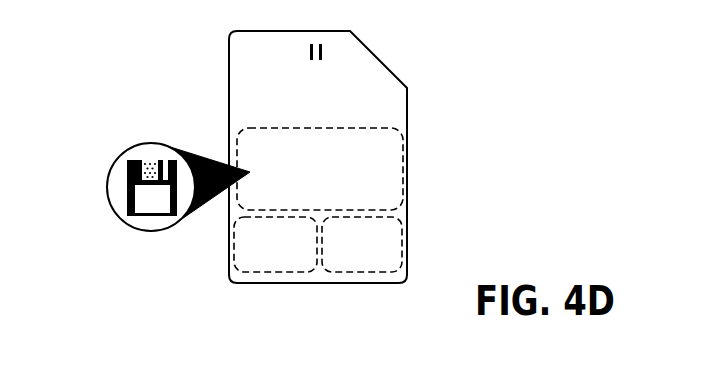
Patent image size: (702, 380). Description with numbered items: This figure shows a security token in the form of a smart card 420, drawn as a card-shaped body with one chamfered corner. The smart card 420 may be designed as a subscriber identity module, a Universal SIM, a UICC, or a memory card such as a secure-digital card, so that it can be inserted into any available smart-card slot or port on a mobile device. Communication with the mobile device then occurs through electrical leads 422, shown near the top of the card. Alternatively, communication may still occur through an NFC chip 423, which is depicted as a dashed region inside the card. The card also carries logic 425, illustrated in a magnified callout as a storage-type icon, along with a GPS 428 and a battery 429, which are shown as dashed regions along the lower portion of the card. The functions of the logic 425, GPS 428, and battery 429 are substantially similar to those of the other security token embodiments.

The smart card 420 is at (258, 157).
The electrical leads 422 is at (382, 32).
The NFC chip 423 is at (381, 165).
The logic 425 is at (136, 190).
The GPS 428 is at (229, 259).
The battery 429 is at (423, 244).